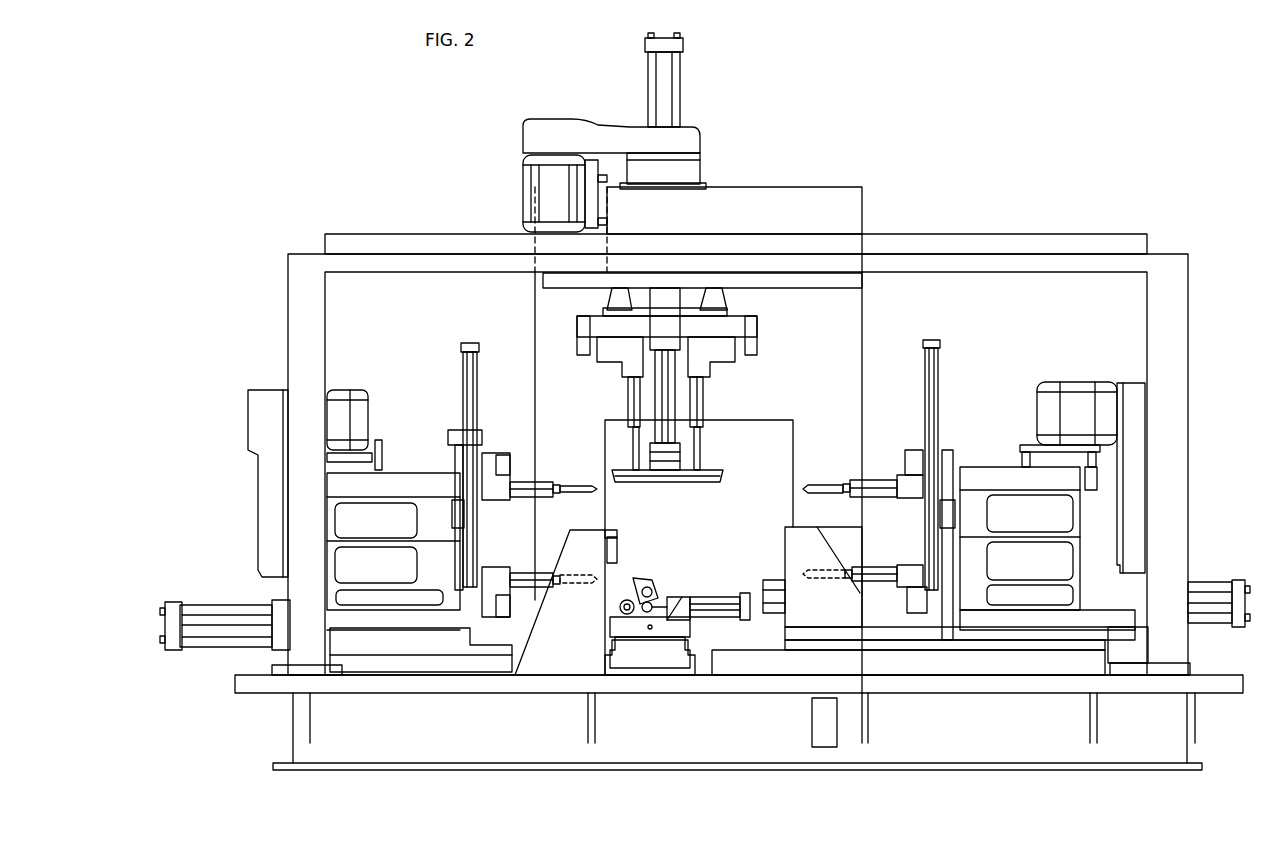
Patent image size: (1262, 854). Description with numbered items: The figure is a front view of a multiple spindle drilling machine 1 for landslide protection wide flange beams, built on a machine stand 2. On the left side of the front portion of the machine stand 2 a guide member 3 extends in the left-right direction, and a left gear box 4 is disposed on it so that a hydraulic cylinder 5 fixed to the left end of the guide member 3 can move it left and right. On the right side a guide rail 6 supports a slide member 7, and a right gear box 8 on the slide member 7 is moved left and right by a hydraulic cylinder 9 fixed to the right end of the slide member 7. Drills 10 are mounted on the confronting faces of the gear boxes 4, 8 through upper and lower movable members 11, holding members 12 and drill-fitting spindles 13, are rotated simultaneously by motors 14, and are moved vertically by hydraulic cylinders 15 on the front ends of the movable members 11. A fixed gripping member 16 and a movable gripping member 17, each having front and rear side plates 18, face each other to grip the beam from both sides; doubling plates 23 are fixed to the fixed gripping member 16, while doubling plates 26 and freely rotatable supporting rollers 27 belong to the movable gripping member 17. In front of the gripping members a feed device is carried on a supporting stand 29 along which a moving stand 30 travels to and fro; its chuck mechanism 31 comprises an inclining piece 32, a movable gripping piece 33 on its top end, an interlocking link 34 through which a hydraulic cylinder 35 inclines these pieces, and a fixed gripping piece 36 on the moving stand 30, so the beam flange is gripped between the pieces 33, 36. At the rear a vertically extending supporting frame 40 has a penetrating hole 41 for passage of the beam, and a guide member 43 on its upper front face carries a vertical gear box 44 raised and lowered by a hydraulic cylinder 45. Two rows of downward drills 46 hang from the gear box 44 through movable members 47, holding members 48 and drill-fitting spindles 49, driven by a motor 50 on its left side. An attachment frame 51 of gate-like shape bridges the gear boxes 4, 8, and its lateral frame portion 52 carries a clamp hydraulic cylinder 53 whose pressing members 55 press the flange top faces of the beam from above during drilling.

The multiple spindle drilling machine 1 is at (668, 763).
The machine stand 2 is at (1182, 705).
The guide member 3 is at (490, 675).
The left gear box 4 is at (418, 472).
The hydraulic cylinder 5 is at (216, 612).
The guide rail 6 is at (872, 675).
The slide member 7 is at (1012, 665).
The right gear box 8 is at (1004, 470).
The hydraulic cylinder 9 is at (1206, 584).
The drills 10 is at (576, 486).
The movable members 11 is at (500, 456).
The holding members 12 is at (496, 500).
The drill-fitting spindles 13 is at (526, 483).
The motors 14 is at (336, 392).
The hydraulic cylinders 15 is at (477, 348).
The fixed gripping member 16 is at (583, 527).
The movable gripping member 17 is at (826, 523).
The side plates 18 is at (560, 560).
The doubling plates 23 is at (614, 535).
The doubling plates 26 is at (785, 530).
The supporting rollers 27 is at (763, 590).
The supporting stand 29 is at (650, 675).
The moving stand 30 is at (690, 632).
The chuck mechanism 31 is at (697, 591).
The inclining piece 32 is at (652, 590).
The movable gripping piece 33 is at (646, 578).
The interlocking link 34 is at (660, 604).
The hydraulic cylinder 35 is at (716, 597).
The fixed gripping piece 36 is at (622, 578).
The supporting frame 40 is at (812, 198).
The penetrating hole 41 is at (782, 430).
The guide member 43 is at (710, 390).
The vertical gear box 44 is at (712, 214).
The hydraulic cylinder 45 is at (680, 74).
The drills 46 is at (633, 452).
The movable members 47 is at (590, 350).
The holding members 48 is at (597, 365).
The drill-fitting spindles 49 is at (628, 410).
The motor 50 is at (523, 172).
The attachment frame 51 is at (972, 220).
The lateral frame portion 52 is at (816, 256).
The clamp hydraulic cylinder 53 is at (664, 350).
The pressing members 55 is at (666, 482).